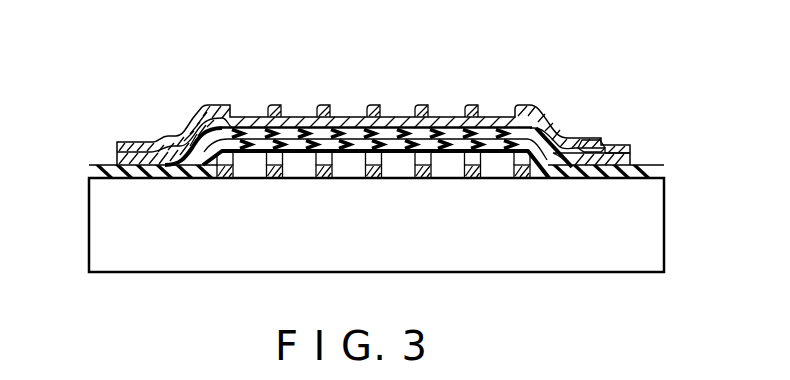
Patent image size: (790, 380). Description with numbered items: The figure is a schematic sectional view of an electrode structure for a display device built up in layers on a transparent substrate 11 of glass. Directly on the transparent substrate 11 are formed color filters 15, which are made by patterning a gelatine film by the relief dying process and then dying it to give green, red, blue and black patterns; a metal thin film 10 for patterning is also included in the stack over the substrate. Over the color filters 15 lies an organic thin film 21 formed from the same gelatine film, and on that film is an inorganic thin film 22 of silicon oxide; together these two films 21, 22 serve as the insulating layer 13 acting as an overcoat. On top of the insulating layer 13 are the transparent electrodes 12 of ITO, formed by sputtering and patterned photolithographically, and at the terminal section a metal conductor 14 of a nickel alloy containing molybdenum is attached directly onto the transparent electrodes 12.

The metal thin film 10 is at (468, 180).
The transparent substrate 11 is at (592, 250).
The transparent electrodes 12 is at (337, 118).
The insulating layer 13 is at (576, 62).
The metal conductor 14 is at (224, 106).
The color filters 15 is at (337, 178).
The organic thin film 21 is at (563, 148).
The inorganic thin film 22 is at (603, 138).